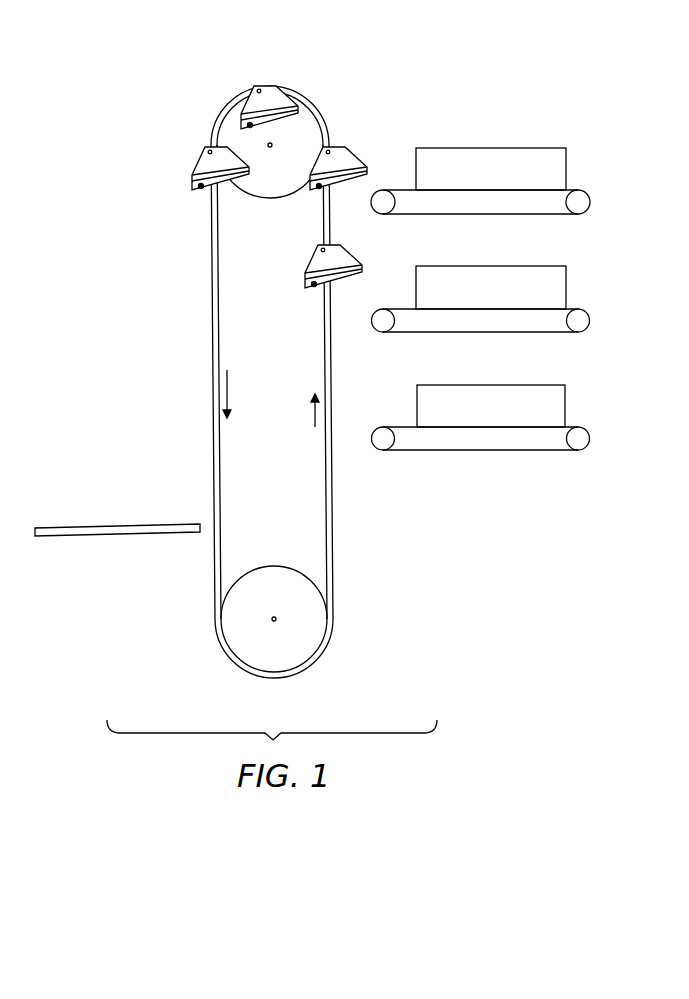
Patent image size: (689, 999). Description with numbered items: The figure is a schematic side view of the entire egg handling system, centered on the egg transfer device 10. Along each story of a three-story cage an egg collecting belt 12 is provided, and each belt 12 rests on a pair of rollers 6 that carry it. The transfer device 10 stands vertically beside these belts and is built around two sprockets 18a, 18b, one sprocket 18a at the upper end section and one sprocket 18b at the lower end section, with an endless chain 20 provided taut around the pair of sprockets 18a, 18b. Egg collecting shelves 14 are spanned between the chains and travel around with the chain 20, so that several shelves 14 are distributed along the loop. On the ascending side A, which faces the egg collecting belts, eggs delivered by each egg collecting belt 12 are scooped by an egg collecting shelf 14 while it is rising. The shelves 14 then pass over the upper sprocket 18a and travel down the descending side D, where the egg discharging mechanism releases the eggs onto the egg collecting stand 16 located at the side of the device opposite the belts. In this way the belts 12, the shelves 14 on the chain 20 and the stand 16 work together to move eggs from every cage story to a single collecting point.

The transfer device 10 is at (267, 345).
The egg collecting belt 12 is at (470, 190).
The egg collecting shelf 14 is at (277, 88).
The egg collecting stand 16 is at (137, 528).
The sprocket 18a is at (226, 141).
The sprocket 18b is at (292, 650).
The chain 20 is at (313, 101).
The conveyors 6 is at (566, 176).
The ascending side A is at (342, 395).
The descending side D is at (196, 310).